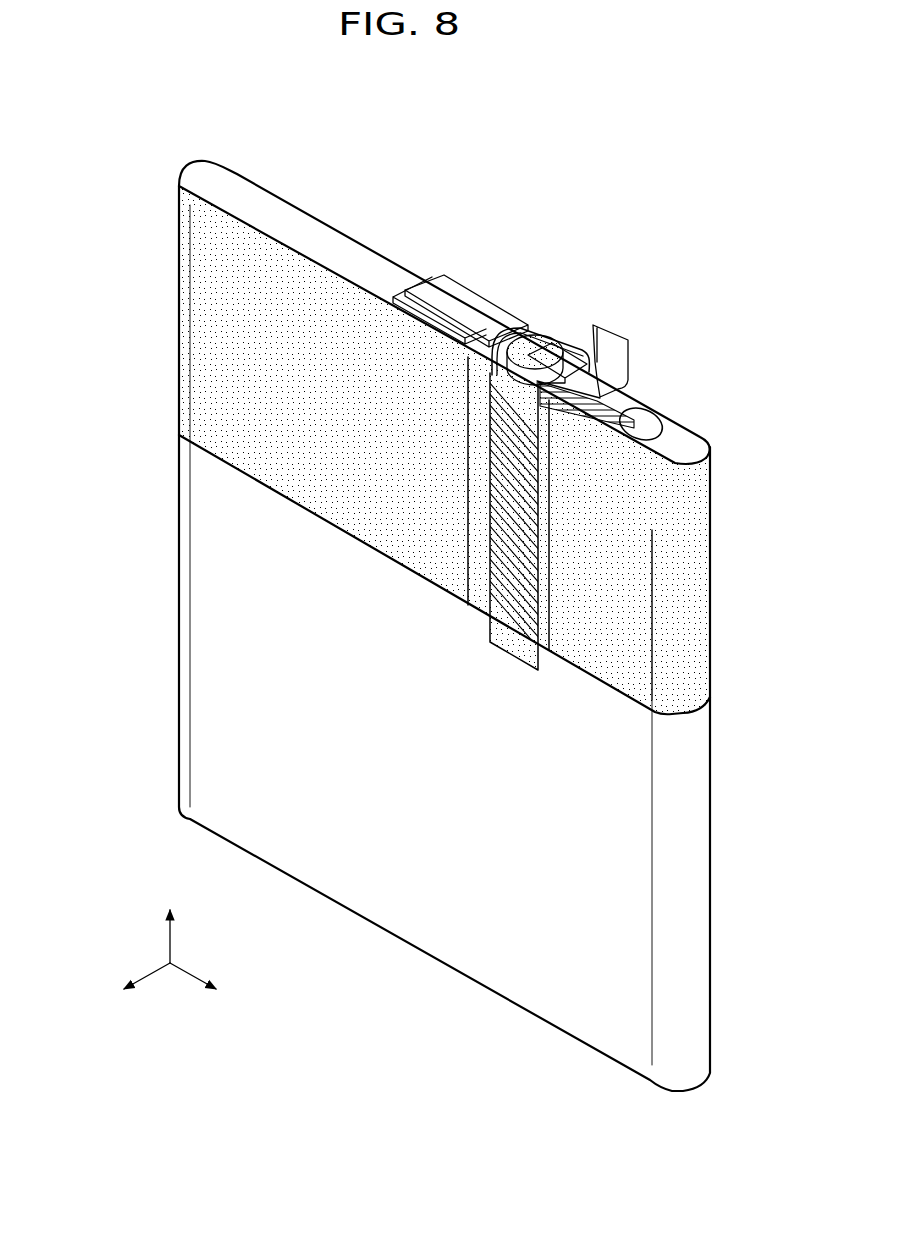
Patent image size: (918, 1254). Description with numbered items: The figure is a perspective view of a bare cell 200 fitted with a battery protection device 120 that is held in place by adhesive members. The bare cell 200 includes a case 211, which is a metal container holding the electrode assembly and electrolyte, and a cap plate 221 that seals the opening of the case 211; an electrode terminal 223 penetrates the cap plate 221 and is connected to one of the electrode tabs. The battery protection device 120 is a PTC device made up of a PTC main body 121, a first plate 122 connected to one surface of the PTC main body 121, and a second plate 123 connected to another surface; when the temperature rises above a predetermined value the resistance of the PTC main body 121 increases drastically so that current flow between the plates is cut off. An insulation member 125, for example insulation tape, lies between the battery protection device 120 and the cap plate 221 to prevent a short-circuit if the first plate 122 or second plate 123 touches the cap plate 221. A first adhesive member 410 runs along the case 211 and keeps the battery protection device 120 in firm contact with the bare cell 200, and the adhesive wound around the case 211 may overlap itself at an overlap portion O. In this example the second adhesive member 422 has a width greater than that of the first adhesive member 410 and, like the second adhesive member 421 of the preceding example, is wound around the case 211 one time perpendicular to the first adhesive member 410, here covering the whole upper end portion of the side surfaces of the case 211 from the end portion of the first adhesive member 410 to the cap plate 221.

The bare cell 200 is at (166, 461).
The case 211 is at (218, 668).
The cap plate 221 is at (214, 178).
The electrode terminal 223 is at (414, 277).
The battery protection device 120 is at (537, 181).
The PTC main body 121 is at (541, 352).
The first plate 122 is at (491, 310).
The second plate 123 is at (610, 350).
The insulation member 125 is at (637, 400).
The first adhesive member 410 is at (510, 658).
The second adhesive member 421 is at (597, 667).
The second adhesive member 422 is at (693, 605).
The overlap portion O is at (502, 603).